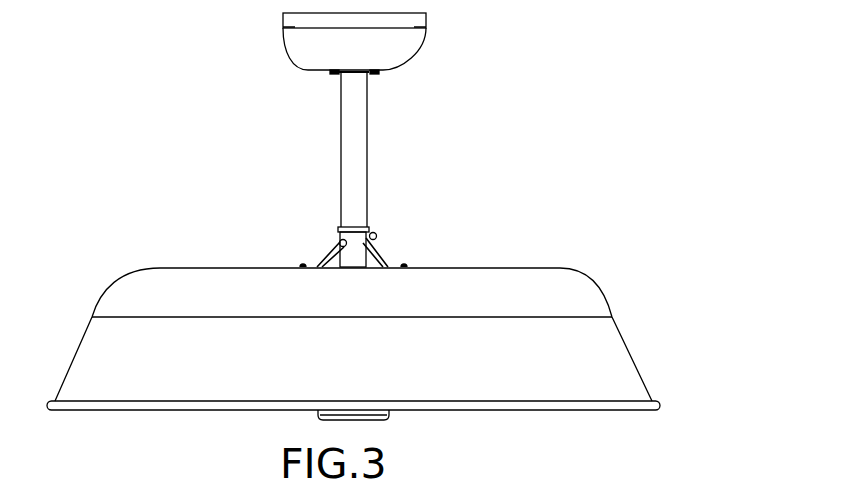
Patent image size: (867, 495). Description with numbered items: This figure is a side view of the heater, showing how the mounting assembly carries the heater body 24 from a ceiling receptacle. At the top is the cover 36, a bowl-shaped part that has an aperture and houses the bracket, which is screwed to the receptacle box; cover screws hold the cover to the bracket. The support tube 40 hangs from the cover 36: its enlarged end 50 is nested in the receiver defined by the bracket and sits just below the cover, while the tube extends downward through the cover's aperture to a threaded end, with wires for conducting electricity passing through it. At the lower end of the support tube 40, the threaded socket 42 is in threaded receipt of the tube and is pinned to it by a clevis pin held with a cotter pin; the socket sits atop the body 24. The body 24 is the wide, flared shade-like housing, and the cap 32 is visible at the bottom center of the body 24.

The body 24 is at (628, 343).
The cap 32 is at (386, 418).
The cover 36 is at (296, 49).
The support tube 40 is at (356, 172).
The socket 42 is at (330, 262).
The enlarged end 50 is at (333, 83).